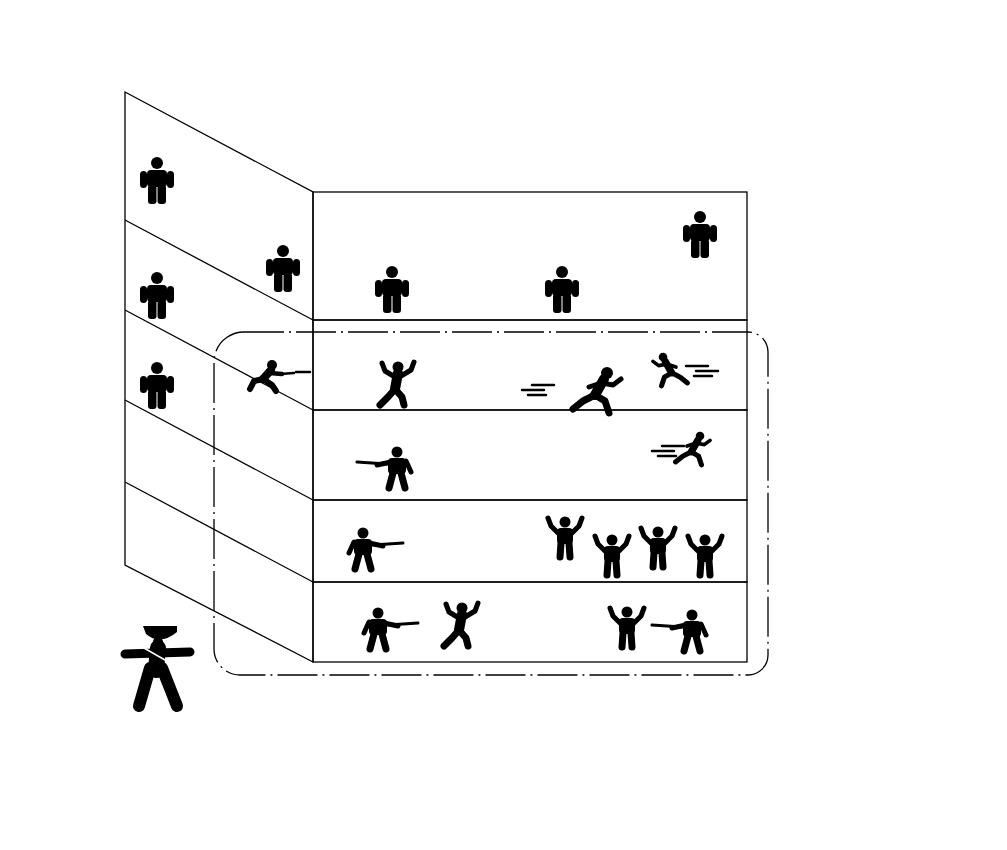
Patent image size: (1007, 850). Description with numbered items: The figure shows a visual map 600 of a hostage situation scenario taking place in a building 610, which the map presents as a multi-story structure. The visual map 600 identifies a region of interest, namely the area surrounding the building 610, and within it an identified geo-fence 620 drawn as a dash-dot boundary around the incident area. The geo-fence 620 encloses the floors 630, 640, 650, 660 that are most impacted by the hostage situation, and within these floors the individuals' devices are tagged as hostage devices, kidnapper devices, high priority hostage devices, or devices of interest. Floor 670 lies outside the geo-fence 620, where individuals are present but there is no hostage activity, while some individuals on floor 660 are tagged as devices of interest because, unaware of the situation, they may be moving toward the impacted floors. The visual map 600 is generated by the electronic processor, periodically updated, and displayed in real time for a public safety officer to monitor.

The visual map 600 is at (112, 35).
The building 610 is at (125, 140).
The geo-fence 620 is at (760, 668).
The floor 630 is at (747, 608).
The floor 640 is at (747, 545).
The floor 650 is at (747, 465).
The floor 660 is at (747, 345).
The floor 670 is at (747, 278).